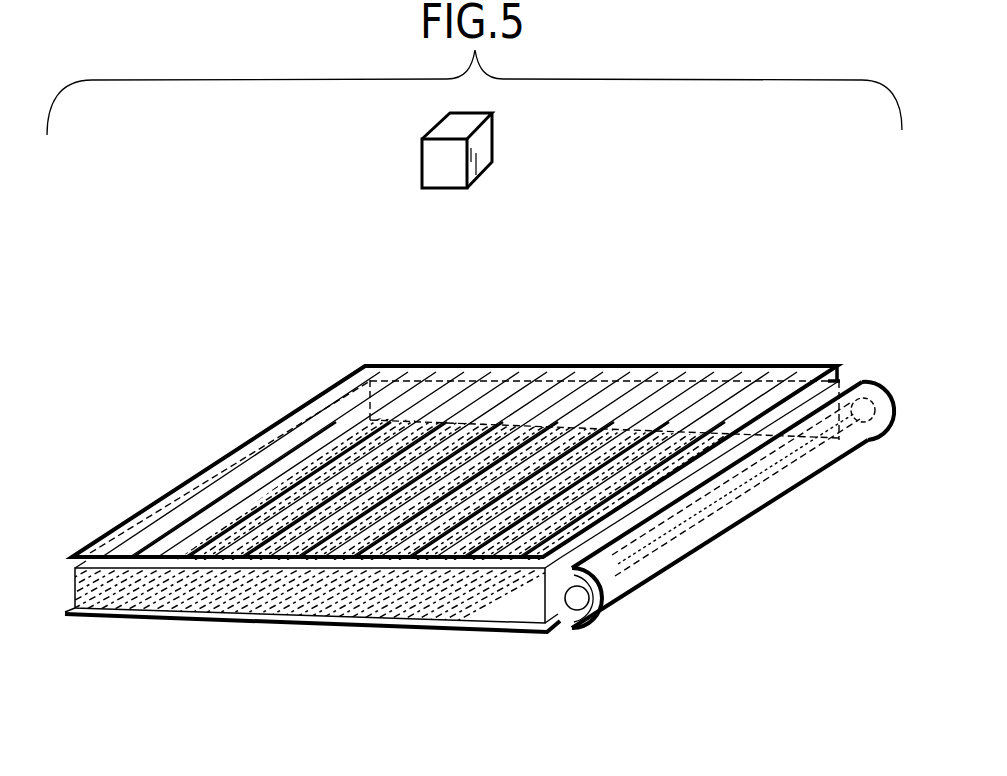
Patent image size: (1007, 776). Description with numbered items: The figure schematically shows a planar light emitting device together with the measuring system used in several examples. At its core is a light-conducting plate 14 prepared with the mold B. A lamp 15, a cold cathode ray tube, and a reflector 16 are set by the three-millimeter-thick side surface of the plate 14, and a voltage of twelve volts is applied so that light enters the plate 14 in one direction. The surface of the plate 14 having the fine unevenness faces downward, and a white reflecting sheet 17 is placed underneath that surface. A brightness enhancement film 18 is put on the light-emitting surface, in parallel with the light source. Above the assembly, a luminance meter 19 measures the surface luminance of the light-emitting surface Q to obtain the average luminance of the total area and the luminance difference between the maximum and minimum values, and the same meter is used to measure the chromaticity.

The light-conducting plate 14 is at (436, 614).
The lamp 15 is at (577, 605).
The reflector 16 is at (875, 382).
The white reflecting sheet 17 is at (285, 620).
The brightness enhancement film 18 is at (163, 558).
The luminance meter 19 is at (484, 150).
The light-emitting surface Q is at (115, 566).